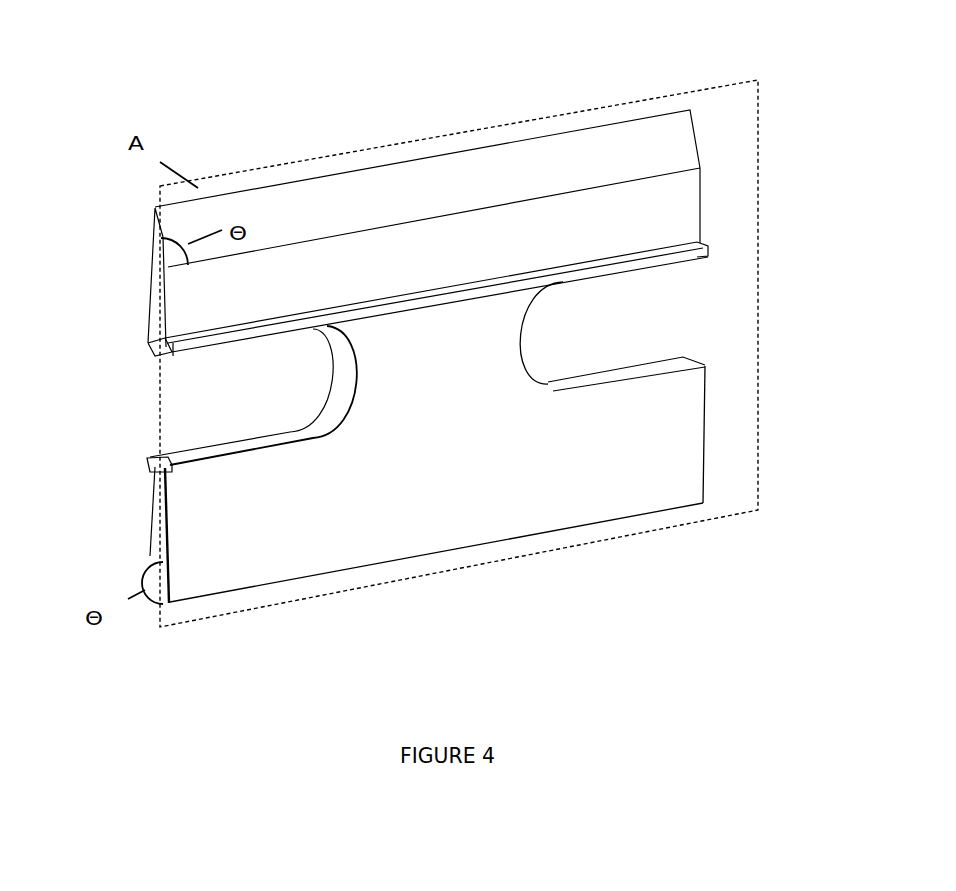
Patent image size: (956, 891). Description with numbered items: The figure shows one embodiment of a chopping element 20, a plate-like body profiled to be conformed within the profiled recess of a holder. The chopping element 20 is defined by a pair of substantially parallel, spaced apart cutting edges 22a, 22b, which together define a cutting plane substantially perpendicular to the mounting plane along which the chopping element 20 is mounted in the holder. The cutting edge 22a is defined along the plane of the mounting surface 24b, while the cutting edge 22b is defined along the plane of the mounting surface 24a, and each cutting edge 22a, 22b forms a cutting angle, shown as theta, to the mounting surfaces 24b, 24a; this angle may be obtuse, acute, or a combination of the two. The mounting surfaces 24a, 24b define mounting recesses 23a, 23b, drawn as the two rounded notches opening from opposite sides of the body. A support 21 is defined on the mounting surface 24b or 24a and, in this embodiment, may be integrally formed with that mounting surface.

The chopping element 20 is at (367, 82).
The support 21 is at (187, 338).
The cutting edge 22a is at (428, 160).
The cutting edge 22b is at (510, 538).
The mounting recess 23a is at (618, 320).
The mounting recess 23b is at (252, 392).
The mounting surface 24a is at (672, 445).
The mounting surface 24b is at (153, 494).